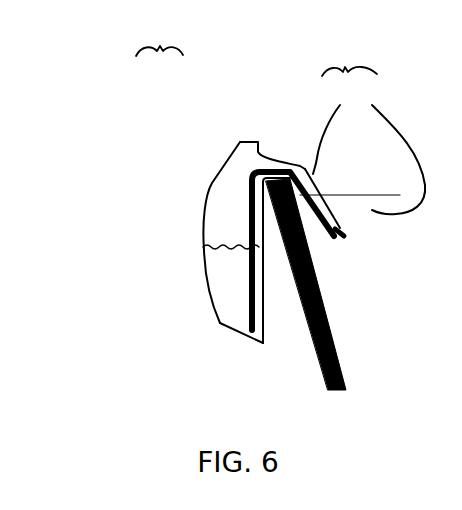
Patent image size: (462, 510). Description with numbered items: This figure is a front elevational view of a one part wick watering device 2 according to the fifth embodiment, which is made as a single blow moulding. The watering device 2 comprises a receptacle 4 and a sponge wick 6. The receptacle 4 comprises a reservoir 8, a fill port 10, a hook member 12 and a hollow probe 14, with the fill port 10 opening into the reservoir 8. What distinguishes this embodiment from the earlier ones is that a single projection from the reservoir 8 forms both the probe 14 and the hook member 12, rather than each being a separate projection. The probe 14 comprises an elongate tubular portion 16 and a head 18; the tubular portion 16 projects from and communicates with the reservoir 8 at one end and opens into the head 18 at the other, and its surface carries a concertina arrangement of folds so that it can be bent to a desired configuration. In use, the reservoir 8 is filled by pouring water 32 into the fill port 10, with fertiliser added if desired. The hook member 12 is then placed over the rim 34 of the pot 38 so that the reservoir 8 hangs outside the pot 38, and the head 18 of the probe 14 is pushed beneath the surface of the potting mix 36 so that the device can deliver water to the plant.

The watering device 2 is at (159, 35).
The receptacle 4 is at (199, 206).
The sponge wick 6 is at (248, 223).
The reservoir 8 is at (228, 287).
The fill port 10 is at (246, 136).
The hook member 12 is at (350, 116).
The hollow probe 14 is at (341, 137).
The elongate tubular portion 16 is at (329, 128).
The head 18 is at (391, 148).
The water 32 is at (206, 246).
The rim 34 is at (268, 190).
The potting mix 36 is at (363, 195).
The pot 38 is at (307, 320).